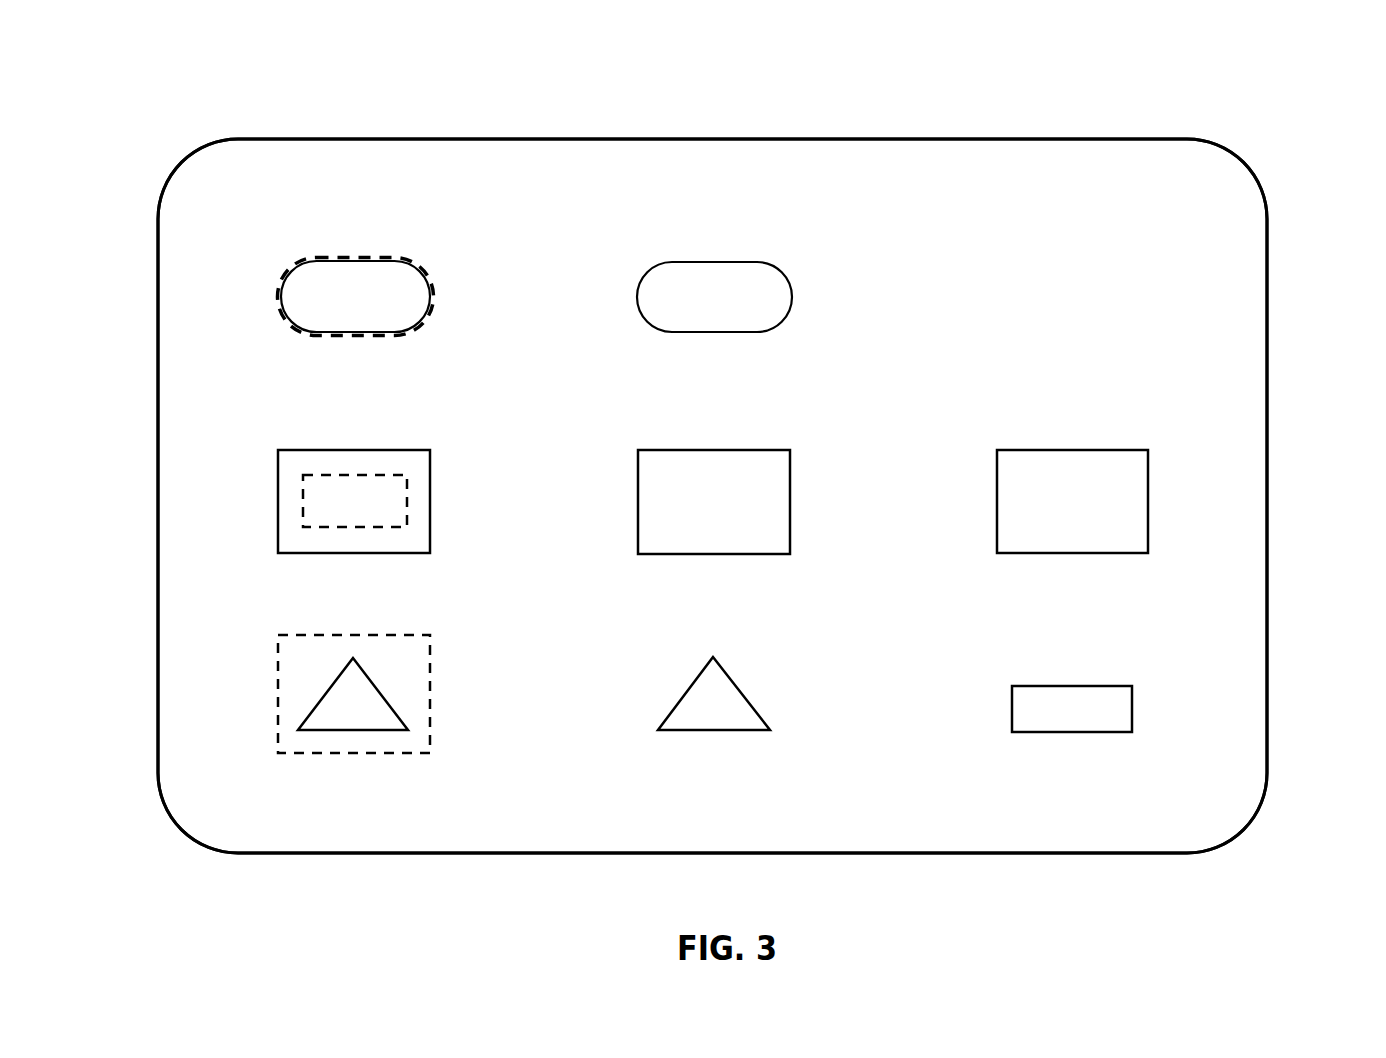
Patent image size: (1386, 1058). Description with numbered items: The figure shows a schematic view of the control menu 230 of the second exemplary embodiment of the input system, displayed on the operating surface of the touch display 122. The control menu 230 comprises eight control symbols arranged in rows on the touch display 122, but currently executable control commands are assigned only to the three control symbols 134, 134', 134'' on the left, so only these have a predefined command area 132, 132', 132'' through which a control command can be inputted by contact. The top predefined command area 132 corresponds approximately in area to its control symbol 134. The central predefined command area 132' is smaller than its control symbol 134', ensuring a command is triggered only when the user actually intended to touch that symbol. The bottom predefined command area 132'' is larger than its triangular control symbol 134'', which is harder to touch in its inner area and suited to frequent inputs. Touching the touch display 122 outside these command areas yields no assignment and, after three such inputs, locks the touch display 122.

The touch display 122 is at (907, 139).
The control menu 230 is at (1225, 478).
The control symbol 134 is at (230, 296).
The predefined command area 132 is at (232, 308).
The control symbol 134' is at (230, 501).
The predefined command area 132' is at (218, 526).
The control symbol 134'' is at (217, 694).
The predefined command area 132'' is at (228, 700).